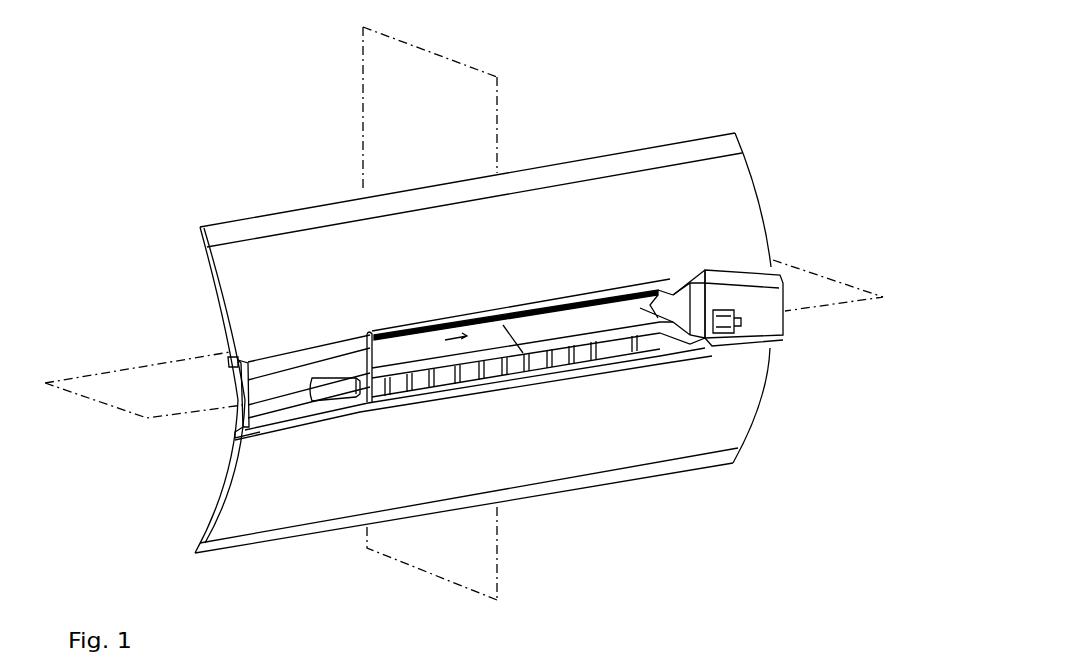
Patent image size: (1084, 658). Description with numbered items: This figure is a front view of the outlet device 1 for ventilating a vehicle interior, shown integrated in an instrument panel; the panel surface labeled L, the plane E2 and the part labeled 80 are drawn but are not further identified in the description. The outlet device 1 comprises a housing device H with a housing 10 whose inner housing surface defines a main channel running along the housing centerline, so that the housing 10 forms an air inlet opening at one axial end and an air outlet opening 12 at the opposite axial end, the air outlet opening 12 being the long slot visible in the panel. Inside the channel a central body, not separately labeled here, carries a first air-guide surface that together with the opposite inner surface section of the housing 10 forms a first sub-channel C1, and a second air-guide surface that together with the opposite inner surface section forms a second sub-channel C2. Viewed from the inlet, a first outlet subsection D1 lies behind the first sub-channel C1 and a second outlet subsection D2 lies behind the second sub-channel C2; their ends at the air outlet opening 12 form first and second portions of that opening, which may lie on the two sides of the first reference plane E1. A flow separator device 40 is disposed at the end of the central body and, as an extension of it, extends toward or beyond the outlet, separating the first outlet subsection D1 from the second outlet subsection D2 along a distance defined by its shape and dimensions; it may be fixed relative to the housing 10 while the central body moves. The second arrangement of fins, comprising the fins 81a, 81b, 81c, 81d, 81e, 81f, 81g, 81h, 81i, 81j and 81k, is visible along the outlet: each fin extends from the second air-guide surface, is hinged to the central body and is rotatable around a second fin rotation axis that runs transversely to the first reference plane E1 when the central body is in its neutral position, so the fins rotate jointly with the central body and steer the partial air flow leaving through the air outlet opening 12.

The outlet device 1 is at (403, 120).
The lining panel L is at (258, 252).
The first reference plane E1 is at (110, 384).
The second plane E2 is at (451, 81).
The housing device H is at (504, 314).
The housing 10 is at (405, 333).
The flow separator device 40 is at (613, 318).
The air outlet opening 12 is at (657, 345).
The first outlet subsection D1 is at (660, 308).
The second outlet subsection D2 is at (615, 363).
The first sub-channel C1 is at (740, 340).
The second sub-channel C2 is at (632, 371).
The bracket 80 is at (368, 406).
The fin 81a is at (388, 398).
The fin 81b is at (411, 394).
The fin 81c is at (434, 390).
The fin 81d is at (460, 386).
The fin 81e is at (484, 382).
The fin 81f is at (507, 378).
The fin 81g is at (529, 374).
The fin 81h is at (552, 370).
The fin 81i is at (574, 366).
The fin 81j is at (595, 362).
The fin 81k is at (634, 364).